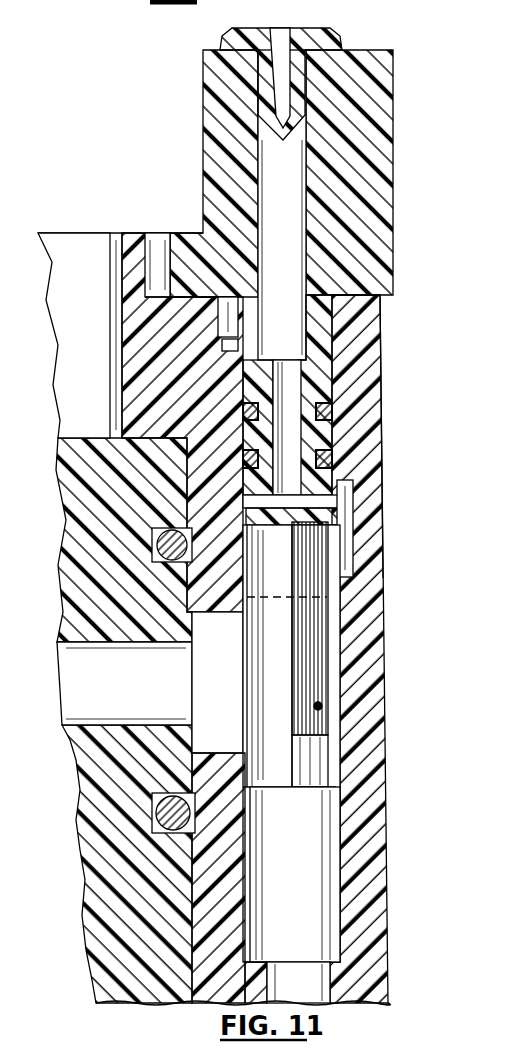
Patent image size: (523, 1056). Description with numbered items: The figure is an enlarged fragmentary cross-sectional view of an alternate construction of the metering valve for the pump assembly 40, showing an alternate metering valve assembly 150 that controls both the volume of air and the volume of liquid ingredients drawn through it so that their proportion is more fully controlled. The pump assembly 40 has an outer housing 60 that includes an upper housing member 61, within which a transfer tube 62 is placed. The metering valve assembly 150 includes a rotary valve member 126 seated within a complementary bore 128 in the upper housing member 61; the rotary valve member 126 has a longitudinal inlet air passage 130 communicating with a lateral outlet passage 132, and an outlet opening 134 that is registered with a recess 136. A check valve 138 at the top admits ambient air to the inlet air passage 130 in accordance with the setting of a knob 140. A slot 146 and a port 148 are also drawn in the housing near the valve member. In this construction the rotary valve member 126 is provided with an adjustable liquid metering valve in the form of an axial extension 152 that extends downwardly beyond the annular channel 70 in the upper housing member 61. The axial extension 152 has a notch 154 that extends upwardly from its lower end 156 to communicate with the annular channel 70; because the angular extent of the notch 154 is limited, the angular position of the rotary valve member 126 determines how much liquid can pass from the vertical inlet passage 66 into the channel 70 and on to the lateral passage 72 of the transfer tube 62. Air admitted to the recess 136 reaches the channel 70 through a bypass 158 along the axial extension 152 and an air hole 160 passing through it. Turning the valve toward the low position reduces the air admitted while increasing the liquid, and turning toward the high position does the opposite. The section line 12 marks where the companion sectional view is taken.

The pump assembly 40 is at (120, 208).
The knob 140 is at (378, 103).
The metering valve assembly 150 is at (398, 50).
The check valve 138 is at (345, 46).
The longitudinal inlet air passage 130 is at (298, 219).
The rotary valve member 126 is at (366, 395).
The complementary bore 128 is at (338, 416).
The upper housing member 61 is at (365, 383).
The outer housing 60 is at (388, 840).
The transfer tube 62 is at (100, 445).
The vent slot 146 is at (220, 318).
The vent port 148 is at (222, 345).
The lateral outlet passage 132 is at (243, 500).
The outlet opening 134 is at (339, 501).
The recess 136 is at (386, 528).
The annular channel 70 is at (190, 607).
The lateral passage 72 is at (100, 722).
The axial extension 152 is at (248, 655).
The bypass 158 is at (364, 654).
The air hole 160 is at (322, 706).
The notch 154 is at (292, 758).
The lower end 156 is at (268, 790).
The vertical inlet passage 66 is at (312, 995).
The section line 12- 12 is at (168, 710).